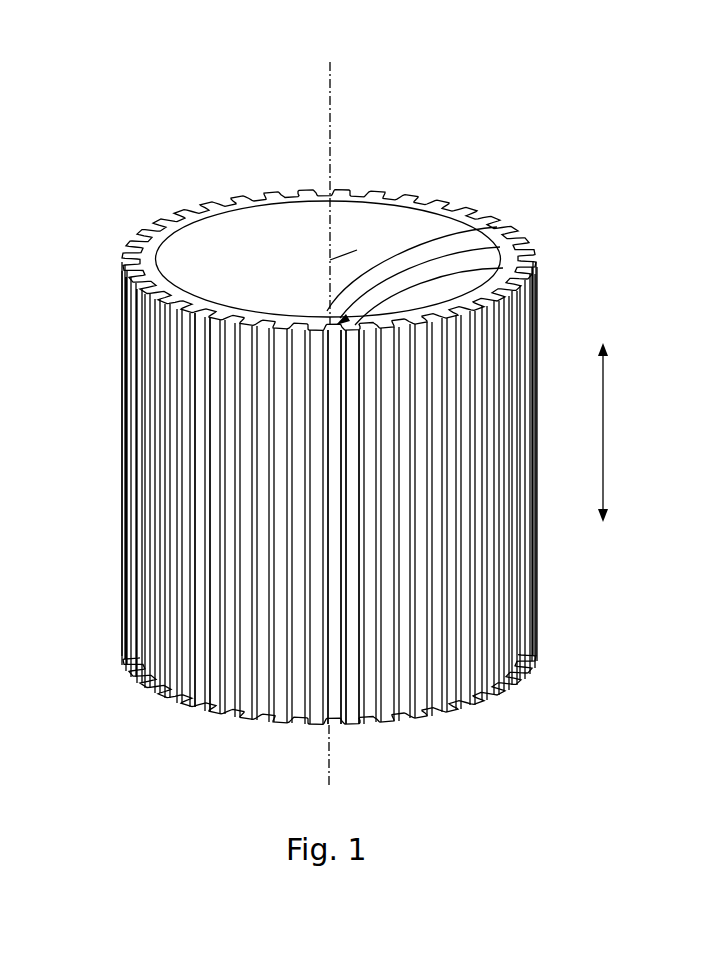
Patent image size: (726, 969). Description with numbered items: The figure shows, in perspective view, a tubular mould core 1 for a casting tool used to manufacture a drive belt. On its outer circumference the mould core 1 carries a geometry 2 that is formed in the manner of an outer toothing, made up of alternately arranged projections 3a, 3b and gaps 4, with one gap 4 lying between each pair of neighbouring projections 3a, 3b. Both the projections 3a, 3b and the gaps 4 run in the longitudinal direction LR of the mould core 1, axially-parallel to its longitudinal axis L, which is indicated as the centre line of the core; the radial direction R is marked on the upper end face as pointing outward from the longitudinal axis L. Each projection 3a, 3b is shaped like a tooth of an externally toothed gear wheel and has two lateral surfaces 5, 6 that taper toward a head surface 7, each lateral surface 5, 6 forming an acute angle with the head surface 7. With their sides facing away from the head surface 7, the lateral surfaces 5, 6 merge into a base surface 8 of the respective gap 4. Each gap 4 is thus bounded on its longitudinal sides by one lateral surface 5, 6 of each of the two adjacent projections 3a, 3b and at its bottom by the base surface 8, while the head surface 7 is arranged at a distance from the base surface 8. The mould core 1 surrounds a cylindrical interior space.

The mould core 1 is at (183, 148).
The geometry 2 is at (117, 257).
The projection 3a is at (497, 227).
The projection 3b is at (503, 268).
The gap 4 is at (505, 245).
The lateral surface 5 is at (346, 352).
The lateral surface 6 is at (330, 430).
The head surface 7 is at (357, 385).
The base surface 8 is at (340, 470).
The longitudinal axis L is at (330, 422).
The radial direction R is at (405, 233).
The longitudinal direction LR is at (618, 432).